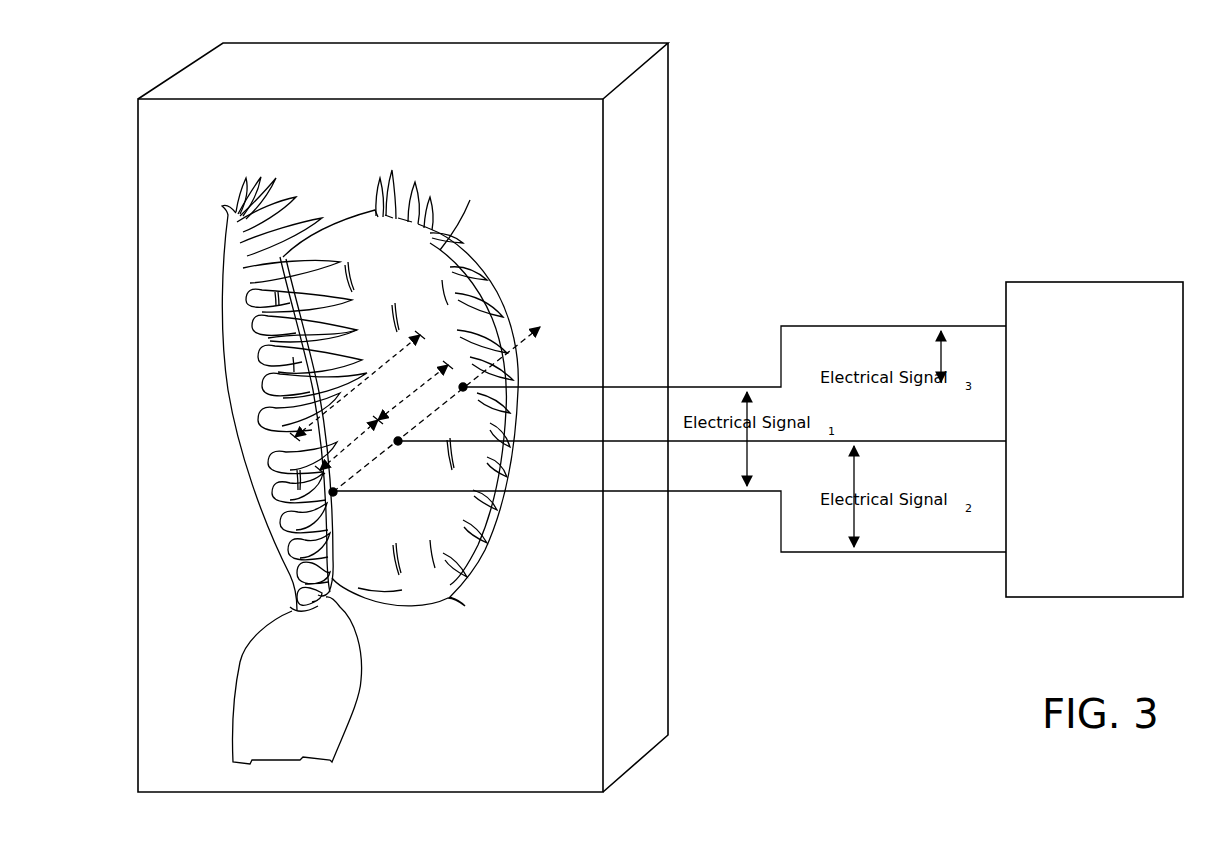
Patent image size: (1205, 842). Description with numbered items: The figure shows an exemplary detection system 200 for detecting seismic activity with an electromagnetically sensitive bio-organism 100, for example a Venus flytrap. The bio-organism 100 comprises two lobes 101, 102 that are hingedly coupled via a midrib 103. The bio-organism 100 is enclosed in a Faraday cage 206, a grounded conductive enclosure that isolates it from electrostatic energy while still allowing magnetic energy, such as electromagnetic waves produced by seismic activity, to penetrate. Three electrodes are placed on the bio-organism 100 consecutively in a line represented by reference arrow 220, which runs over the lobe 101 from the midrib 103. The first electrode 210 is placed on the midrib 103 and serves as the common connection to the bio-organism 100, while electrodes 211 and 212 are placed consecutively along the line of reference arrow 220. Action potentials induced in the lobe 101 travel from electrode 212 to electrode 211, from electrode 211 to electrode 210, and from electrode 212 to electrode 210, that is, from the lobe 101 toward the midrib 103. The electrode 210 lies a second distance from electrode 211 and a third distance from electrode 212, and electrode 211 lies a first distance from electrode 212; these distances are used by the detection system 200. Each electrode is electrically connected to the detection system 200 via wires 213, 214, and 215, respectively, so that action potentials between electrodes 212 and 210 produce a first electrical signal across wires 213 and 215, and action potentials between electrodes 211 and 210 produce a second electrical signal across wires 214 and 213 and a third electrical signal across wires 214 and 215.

The electromagnetically sensitive bio-organism 100 is at (428, 182).
The lobe 101 is at (405, 266).
The lobe 102 is at (248, 458).
The midrib 103 is at (322, 344).
The detection system 200 is at (1078, 537).
The Faraday cage 206 is at (425, 42).
The first electrode 210 is at (342, 497).
The electrode 211 is at (399, 446).
The electrode 212 is at (464, 392).
The wire 213 is at (603, 491).
The wire 214 is at (603, 441).
The wire 215 is at (603, 387).
The reference arrow 220 is at (355, 478).